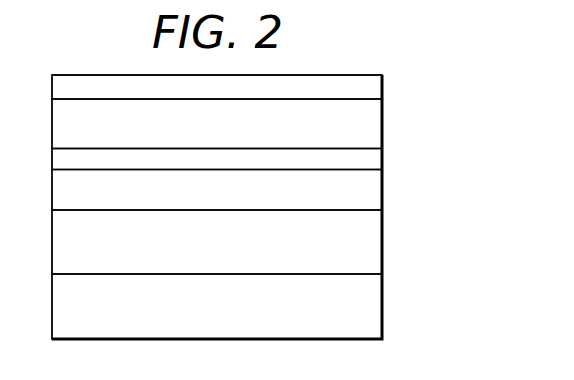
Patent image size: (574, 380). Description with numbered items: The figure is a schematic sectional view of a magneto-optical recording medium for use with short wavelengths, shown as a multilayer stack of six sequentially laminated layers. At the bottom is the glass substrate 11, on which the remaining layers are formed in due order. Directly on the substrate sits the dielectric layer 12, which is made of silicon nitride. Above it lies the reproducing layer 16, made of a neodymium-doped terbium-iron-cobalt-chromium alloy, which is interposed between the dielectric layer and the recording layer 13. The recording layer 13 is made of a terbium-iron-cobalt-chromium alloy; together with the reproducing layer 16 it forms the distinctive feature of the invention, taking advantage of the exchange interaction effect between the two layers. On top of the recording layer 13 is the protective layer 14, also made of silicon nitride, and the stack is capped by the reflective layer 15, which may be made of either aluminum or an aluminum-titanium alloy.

The 2P glass substrate 11 is at (370, 307).
The dielectric layer 12 is at (370, 242).
The reproducing layer 16 is at (370, 192).
The recording layer 13 is at (368, 160).
The protective layer 14 is at (371, 123).
The reflective layer 15 is at (371, 88).